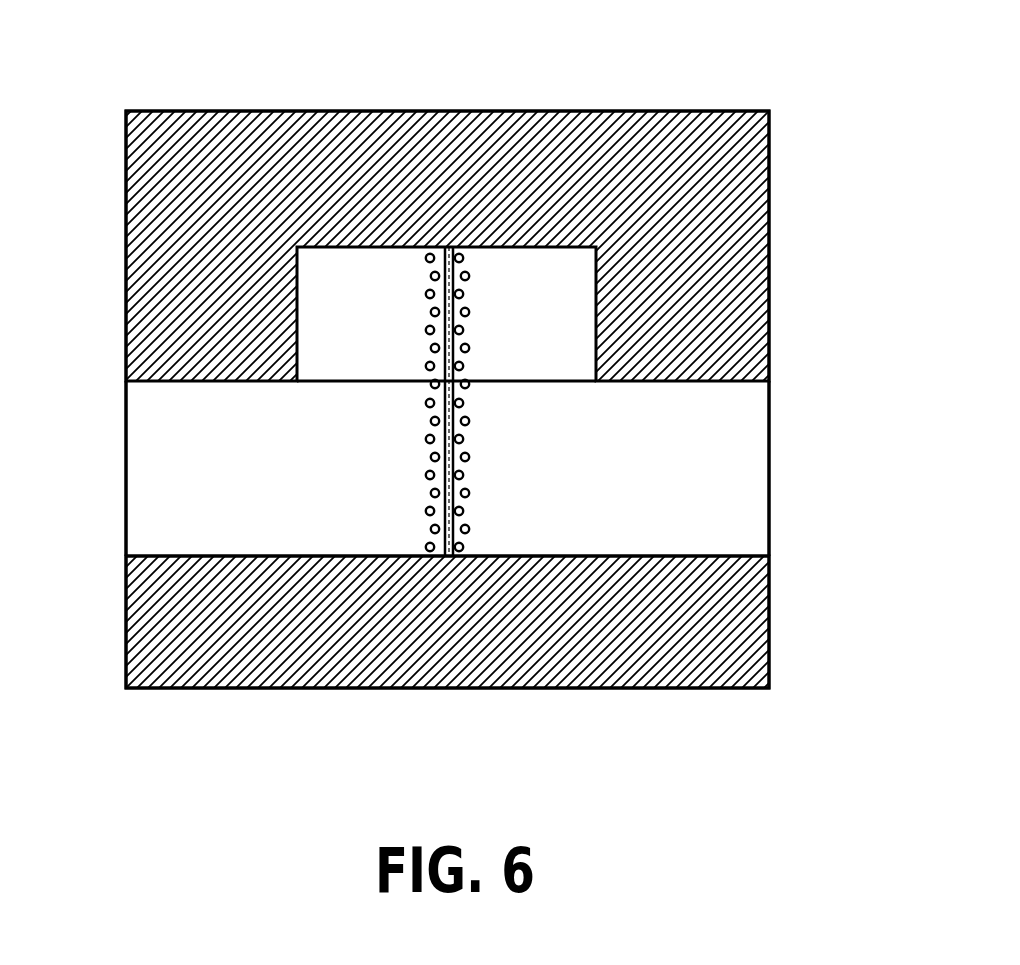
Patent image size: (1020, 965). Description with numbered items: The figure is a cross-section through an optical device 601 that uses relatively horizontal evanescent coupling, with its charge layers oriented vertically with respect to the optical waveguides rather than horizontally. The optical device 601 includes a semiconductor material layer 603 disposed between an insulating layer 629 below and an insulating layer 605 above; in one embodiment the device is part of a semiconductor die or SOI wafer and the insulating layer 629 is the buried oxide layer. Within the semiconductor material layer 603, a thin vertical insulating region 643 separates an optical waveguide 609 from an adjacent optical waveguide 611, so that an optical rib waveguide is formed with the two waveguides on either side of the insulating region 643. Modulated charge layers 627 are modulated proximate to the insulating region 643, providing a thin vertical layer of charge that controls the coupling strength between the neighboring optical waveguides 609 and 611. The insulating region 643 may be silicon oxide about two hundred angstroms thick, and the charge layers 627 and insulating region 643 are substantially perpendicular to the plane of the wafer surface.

The optical device 601 is at (880, 78).
The insulating layer 605 is at (769, 242).
The insulating layer 629 is at (769, 622).
The optical waveguide 611 is at (740, 408).
The semiconductor material layer 603 is at (763, 474).
The optical waveguide 609 is at (140, 456).
The insulating region 643 is at (455, 378).
The modulated charge layers 627 is at (425, 530).